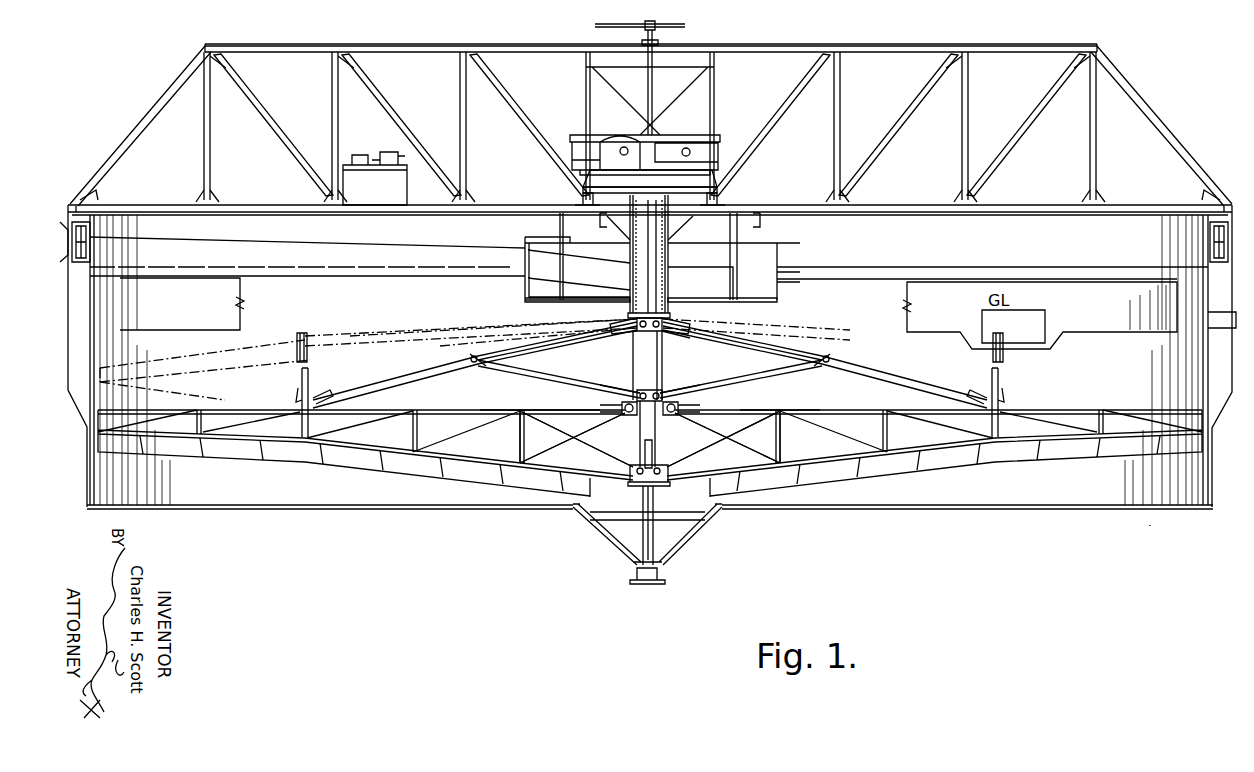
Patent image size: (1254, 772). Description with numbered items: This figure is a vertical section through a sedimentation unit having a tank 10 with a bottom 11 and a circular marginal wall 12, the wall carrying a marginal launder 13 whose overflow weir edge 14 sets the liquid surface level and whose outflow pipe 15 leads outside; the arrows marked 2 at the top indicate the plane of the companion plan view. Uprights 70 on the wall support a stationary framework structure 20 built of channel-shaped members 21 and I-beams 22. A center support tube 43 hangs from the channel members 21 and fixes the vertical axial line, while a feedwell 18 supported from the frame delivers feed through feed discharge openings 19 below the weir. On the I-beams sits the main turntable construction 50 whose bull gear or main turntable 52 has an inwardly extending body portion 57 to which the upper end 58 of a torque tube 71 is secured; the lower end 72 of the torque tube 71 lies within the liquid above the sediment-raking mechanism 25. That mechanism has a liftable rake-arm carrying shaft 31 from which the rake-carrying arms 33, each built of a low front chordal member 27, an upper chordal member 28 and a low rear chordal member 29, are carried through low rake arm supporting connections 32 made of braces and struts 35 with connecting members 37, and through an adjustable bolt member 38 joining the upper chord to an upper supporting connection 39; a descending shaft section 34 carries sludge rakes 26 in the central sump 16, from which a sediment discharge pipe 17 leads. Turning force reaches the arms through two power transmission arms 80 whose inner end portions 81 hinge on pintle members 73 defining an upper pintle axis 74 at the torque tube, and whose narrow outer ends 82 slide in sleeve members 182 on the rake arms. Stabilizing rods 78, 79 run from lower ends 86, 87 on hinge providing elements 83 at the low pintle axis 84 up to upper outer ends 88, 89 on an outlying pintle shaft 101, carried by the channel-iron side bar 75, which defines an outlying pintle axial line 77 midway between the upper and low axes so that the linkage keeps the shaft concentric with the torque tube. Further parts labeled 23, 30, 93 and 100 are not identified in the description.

The section line for Fig. 2 is at (70, 0).
The tank 10 is at (1160, 530).
The tank bottom 11 is at (1092, 508).
The marginal wall 12 is at (1212, 500).
The marginal launder 13 is at (104, 312).
The overflow weir edge 14 is at (178, 282).
The outflow pipe 15 is at (1222, 330).
The central sump 16 is at (700, 530).
The sediment discharge pipe 17 is at (634, 575).
The feedwell 18 is at (752, 268).
The feed discharge openings 19 is at (760, 310).
The stationary framework structure 20 is at (538, 188).
The channel-shaped members 21 is at (592, 57).
The I-beams 22 is at (585, 198).
The rake arm truss 23 is at (360, 420).
The sediment-raking mechanism 25 is at (560, 356).
The sludge rakes 26 is at (628, 484).
The low front chordal member 27 is at (735, 430).
The upper chordal member 28 is at (500, 418).
The low rear chordal member 29 is at (580, 430).
The arm member 30 is at (548, 340).
The rake-arm carrying shaft 31 is at (680, 370).
The rake arm supporting connections 32 is at (604, 430).
The rake-carrying arms 33 is at (530, 430).
The descending shaft section 34 is at (656, 506).
The braces and struts 35 is at (642, 442).
The connecting members 37 is at (638, 460).
The adjustable bolt member 38 is at (678, 406).
The upper supporting connection 39 is at (622, 406).
The center support tube 43 is at (652, 100).
The main turntable construction 50 is at (622, 182).
The main turntable 52 is at (628, 186).
The body portion 57 is at (622, 192).
The upper end of torque tube 58 is at (660, 260).
The uprights 70 is at (96, 225).
The torque tube 71 is at (640, 274).
The lower end of torque tube 72 is at (628, 315).
The hinge pintle members 73 is at (663, 344).
The upper pintle axis 74 is at (655, 312).
The channel-iron side bar 75 is at (886, 365).
The outlying pintle axial line 77 is at (475, 353).
The stabilizing rod 78 is at (760, 378).
The stabilizing rod 79 is at (540, 378).
The power transmission arms 80 is at (452, 362).
The inner end portions 81 is at (676, 336).
The narrow outer end 82 is at (314, 388).
The hinge providing elements 83 is at (662, 420).
The low pintle axis 84 is at (648, 390).
The lower end of stabilizing rod 86 is at (663, 392).
The lower end of stabilizing rod 87 is at (634, 392).
The upper outer end of stabilizing rod 88 is at (818, 370).
The upper outer end of stabilizing rod 89 is at (490, 370).
The rake blades 93 is at (278, 460).
The raised arm position 100 is at (462, 330).
The outlying pintle shaft 101 is at (474, 352).
The sleeve member 182 is at (292, 386).